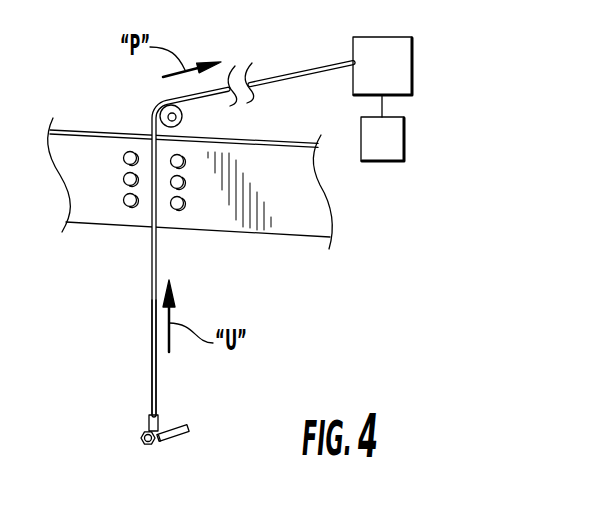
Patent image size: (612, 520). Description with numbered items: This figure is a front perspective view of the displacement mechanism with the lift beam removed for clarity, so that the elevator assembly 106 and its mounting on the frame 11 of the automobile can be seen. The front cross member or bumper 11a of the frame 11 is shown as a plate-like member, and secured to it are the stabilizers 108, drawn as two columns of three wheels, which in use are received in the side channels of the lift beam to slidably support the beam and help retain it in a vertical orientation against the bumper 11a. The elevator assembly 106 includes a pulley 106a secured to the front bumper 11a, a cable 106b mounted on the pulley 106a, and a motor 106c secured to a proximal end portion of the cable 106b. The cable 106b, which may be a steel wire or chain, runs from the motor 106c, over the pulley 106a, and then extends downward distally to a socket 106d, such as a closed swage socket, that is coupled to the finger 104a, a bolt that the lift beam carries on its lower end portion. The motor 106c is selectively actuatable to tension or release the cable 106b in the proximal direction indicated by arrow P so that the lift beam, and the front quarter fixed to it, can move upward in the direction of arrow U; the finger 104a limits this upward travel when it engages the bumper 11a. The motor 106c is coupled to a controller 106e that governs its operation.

The frame 11 is at (292, 232).
The front cross member or bumper 11a is at (317, 218).
The lower stopper or finger 104a is at (187, 427).
The elevator assembly 106 is at (316, 50).
The pulley 106a is at (146, 108).
The cable 106b is at (153, 329).
The motor 106c is at (398, 62).
The socket 106d is at (153, 444).
The controller 106e is at (398, 135).
The stabilizers 108 is at (123, 203).